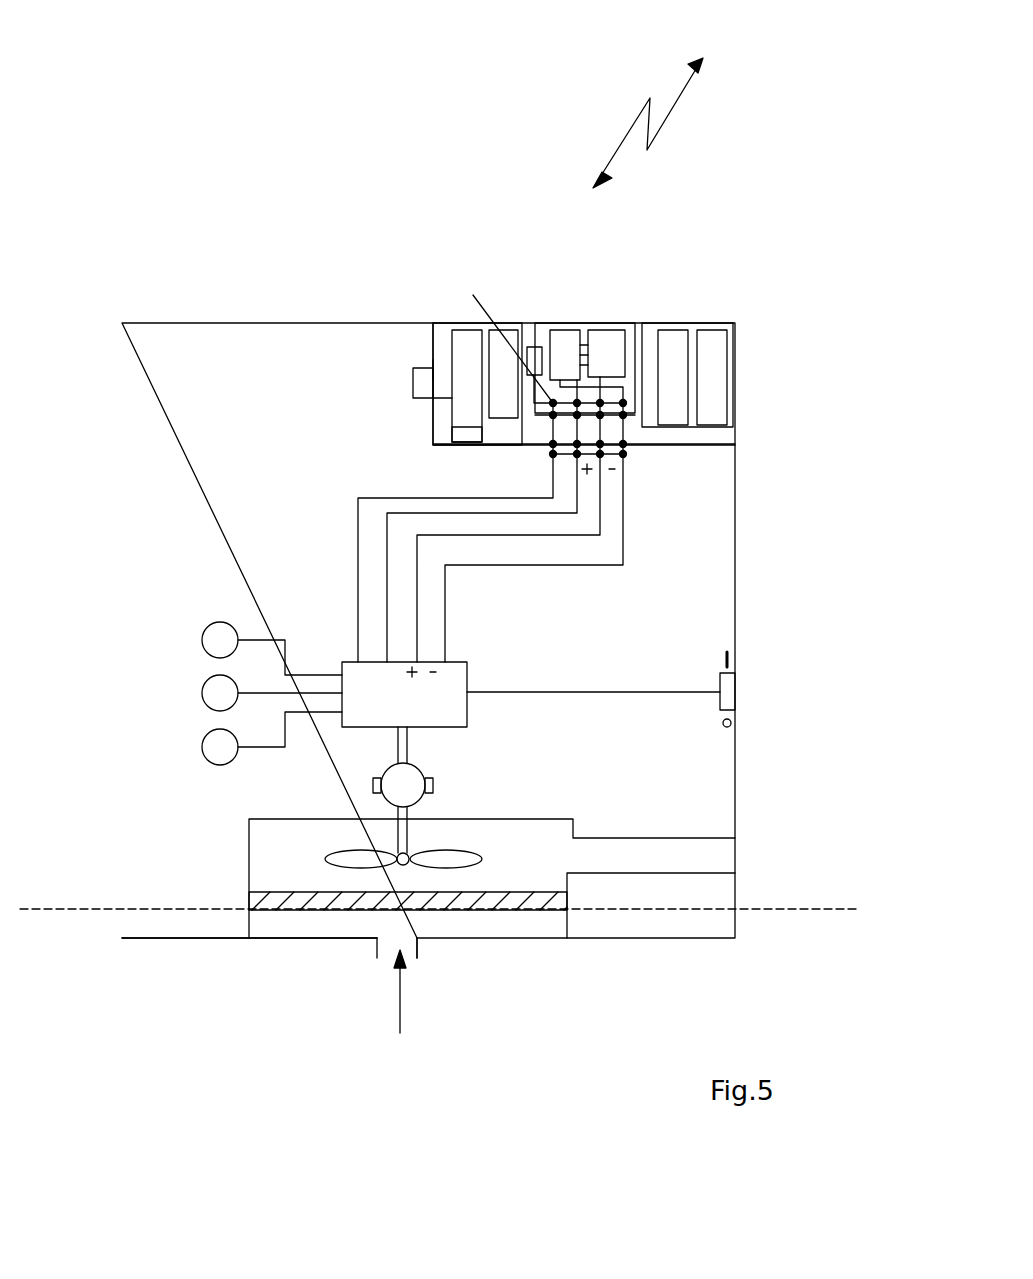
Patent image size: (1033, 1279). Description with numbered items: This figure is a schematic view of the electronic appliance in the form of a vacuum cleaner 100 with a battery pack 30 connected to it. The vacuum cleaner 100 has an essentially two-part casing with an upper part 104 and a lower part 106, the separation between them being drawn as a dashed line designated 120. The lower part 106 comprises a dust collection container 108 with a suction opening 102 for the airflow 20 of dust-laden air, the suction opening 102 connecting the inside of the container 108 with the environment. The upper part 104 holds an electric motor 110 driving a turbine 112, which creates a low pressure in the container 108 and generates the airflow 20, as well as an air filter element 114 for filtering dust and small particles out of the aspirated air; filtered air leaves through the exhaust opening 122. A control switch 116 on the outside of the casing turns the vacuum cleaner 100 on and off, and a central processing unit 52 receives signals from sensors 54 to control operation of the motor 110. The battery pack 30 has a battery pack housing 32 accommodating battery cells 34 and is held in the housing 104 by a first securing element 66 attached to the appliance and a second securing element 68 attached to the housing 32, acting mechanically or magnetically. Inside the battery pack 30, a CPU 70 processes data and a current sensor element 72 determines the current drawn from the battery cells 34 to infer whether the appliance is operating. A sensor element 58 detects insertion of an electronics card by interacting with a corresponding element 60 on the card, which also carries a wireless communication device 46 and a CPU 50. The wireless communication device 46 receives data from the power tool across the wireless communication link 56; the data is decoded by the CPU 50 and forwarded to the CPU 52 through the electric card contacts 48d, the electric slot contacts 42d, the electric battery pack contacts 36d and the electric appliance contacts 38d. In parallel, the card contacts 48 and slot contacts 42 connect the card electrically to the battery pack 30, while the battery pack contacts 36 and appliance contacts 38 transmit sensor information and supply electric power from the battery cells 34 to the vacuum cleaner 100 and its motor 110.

The airflow 20 is at (400, 1008).
The battery pack 30 is at (647, 296).
The battery pack housing 32 is at (717, 330).
The battery cell 34 is at (506, 340).
The battery pack contacts 36 is at (623, 444).
The electric battery pack contacts 36d is at (577, 444).
The appliance contacts 38 is at (623, 454).
The electric appliance contacts 38d is at (577, 454).
The slot contacts 42 is at (623, 415).
The electric slot contacts 42d is at (496, 334).
The wireless communication device 46 is at (607, 335).
The card contacts 48 is at (623, 403).
The electric card contacts 48d is at (577, 403).
The CPU of the electronics card 50 is at (574, 325).
The central processing unit 52 is at (352, 670).
The sensors 54 is at (213, 750).
The wireless communication link 56 is at (673, 107).
The sensor element 58 is at (534, 346).
The corresponding element 60 is at (541, 346).
The first securing element 66 is at (413, 385).
The second securing element 68 is at (433, 367).
The CPU of the battery pack 70 is at (463, 330).
The current sensor element 72 is at (455, 436).
The vacuum cleaner 100 is at (740, 190).
The suction opening 102 is at (420, 945).
The upper part 104 is at (737, 596).
The lower part 106 is at (275, 940).
The dust collection container 108 is at (341, 925).
The electric motor 110 is at (410, 775).
The turbine 112 is at (460, 858).
The air filter element 114 is at (540, 903).
The control switch 116 is at (727, 690).
The separation 120 is at (762, 915).
The exhaust opening 122 is at (680, 840).